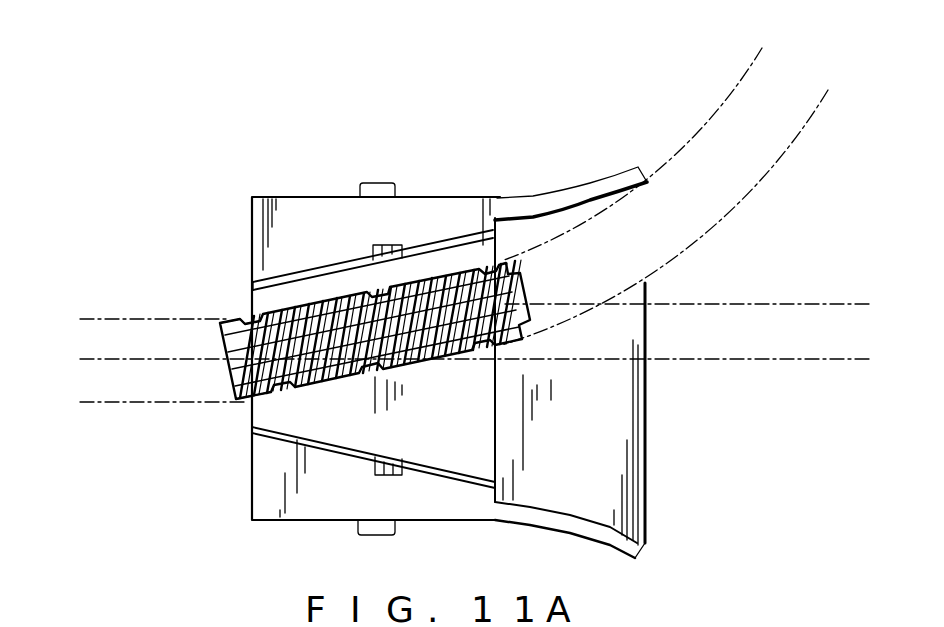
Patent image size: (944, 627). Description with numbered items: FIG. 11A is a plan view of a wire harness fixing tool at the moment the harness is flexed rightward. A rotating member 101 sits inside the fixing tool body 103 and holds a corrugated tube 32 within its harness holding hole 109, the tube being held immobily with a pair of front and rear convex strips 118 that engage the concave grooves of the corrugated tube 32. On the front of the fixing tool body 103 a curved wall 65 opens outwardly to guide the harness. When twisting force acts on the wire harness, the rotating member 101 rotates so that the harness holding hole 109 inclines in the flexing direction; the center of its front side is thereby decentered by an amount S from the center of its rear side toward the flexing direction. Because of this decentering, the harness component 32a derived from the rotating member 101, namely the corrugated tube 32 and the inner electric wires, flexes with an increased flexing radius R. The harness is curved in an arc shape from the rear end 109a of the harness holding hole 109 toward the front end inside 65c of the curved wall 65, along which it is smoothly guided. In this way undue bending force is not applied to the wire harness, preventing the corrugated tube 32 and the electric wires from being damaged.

The fixing tool body 103 is at (302, 197).
The rotating member 101 is at (360, 278).
The convex strips 118 is at (292, 388).
The harness holding hole 109 is at (432, 280).
The rear end of the harness holding hole 109a is at (250, 315).
The corrugated tube 32 is at (206, 306).
The harness component 32a is at (560, 291).
The curved wall 65 is at (598, 175).
The front end inside of the curved wall 65c is at (643, 180).
The flexing radius R is at (574, 222).
The decentering amount S is at (867, 310).